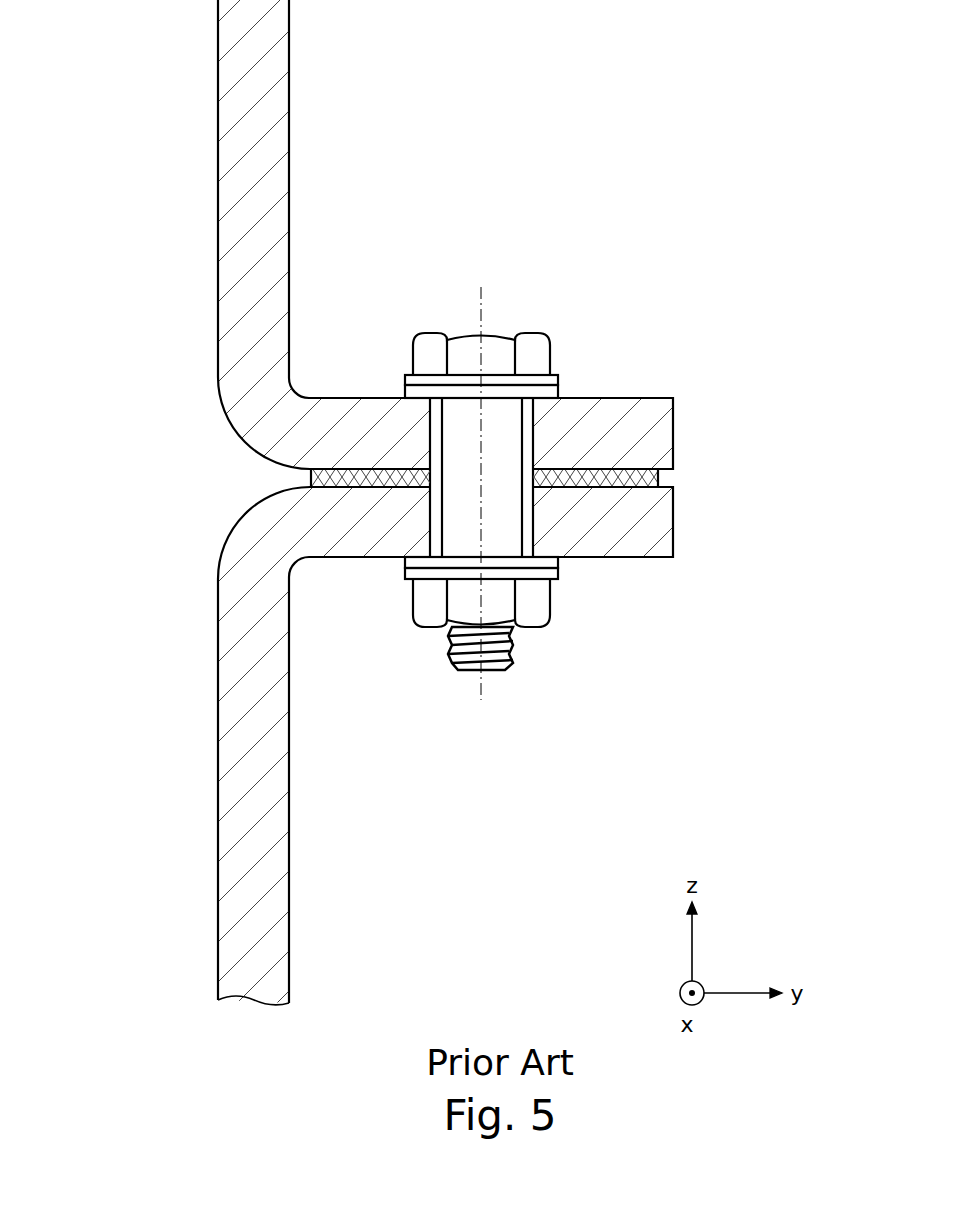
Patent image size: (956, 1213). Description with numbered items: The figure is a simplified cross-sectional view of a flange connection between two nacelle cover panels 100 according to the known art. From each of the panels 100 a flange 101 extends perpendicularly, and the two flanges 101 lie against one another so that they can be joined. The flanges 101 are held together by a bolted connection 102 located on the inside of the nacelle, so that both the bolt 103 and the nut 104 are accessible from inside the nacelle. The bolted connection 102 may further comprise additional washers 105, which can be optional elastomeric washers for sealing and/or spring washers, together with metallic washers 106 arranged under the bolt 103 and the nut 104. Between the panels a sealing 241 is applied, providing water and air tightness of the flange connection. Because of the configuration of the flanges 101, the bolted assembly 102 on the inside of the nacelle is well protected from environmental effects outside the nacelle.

The nacelle cover panel 100 is at (230, 125).
The flange 101 is at (370, 412).
The bolted connection 102 is at (551, 447).
The bolt 103 is at (532, 347).
The nut 104 is at (533, 613).
The additional washer 105 is at (553, 394).
The metallic washer 106 is at (553, 378).
The sealing 241 is at (652, 474).